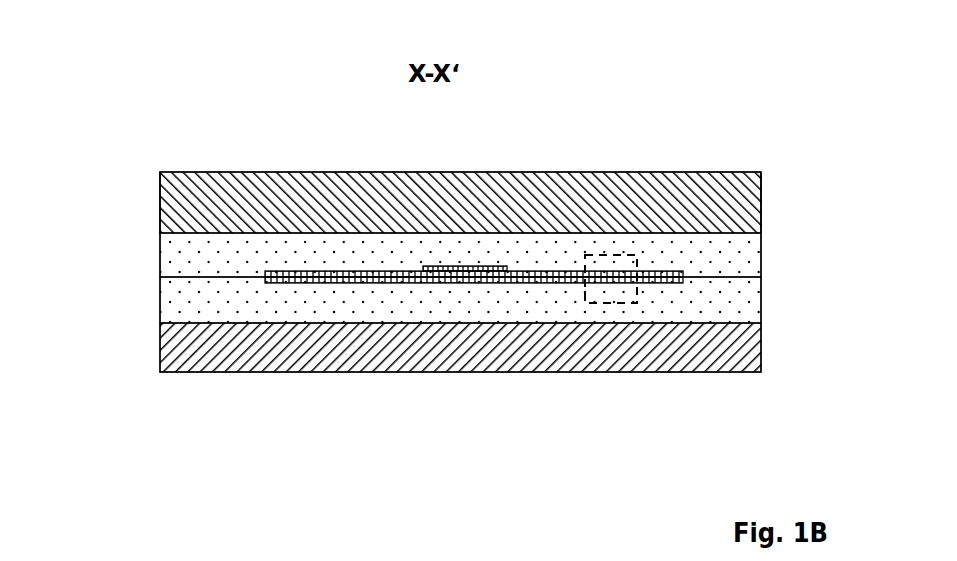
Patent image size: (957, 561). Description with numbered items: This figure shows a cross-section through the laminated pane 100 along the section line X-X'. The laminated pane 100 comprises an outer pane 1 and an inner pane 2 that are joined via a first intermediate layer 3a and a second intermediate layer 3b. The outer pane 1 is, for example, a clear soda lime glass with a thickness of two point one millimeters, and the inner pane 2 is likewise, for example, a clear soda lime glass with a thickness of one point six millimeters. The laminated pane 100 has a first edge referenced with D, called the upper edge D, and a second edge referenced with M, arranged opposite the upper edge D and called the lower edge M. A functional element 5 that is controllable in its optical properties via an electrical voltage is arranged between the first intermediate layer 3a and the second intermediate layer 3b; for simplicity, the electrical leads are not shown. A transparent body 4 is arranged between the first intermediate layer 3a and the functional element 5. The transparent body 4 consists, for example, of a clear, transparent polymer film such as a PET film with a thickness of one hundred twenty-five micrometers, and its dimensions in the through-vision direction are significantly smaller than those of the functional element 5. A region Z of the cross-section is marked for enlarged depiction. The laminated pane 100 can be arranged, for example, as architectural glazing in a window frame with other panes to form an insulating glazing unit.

The laminated pane 100 is at (207, 105).
The outer pane 1 is at (173, 172).
The inner pane 2 is at (239, 358).
The first intermediate layer 3a is at (737, 252).
The second intermediate layer 3b is at (746, 310).
The transparent body 4 is at (423, 268).
The functional element 5 is at (488, 279).
The lower edge M is at (160, 190).
The upper edge D is at (763, 192).
The region Z is at (622, 303).